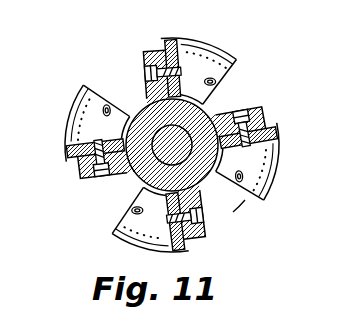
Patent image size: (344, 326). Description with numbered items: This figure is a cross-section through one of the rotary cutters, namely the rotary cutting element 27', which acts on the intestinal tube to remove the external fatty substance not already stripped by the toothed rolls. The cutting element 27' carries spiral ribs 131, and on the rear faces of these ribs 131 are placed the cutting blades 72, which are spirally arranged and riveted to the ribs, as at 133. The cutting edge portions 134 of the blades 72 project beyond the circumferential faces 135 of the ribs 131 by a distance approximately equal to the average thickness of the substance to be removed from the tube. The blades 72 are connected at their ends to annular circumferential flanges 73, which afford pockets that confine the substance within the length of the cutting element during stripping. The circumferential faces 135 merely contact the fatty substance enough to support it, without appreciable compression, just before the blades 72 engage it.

The rotary cutting element 27' is at (182, 144).
The cutting blades 72 is at (192, 60).
The annular circumferential flanges 73 is at (208, 194).
The spiral ribs 131 is at (153, 55).
The rivets 133 is at (143, 62).
The cutting edge portions 134 is at (269, 37).
The circumferential faces 135 is at (305, 97).